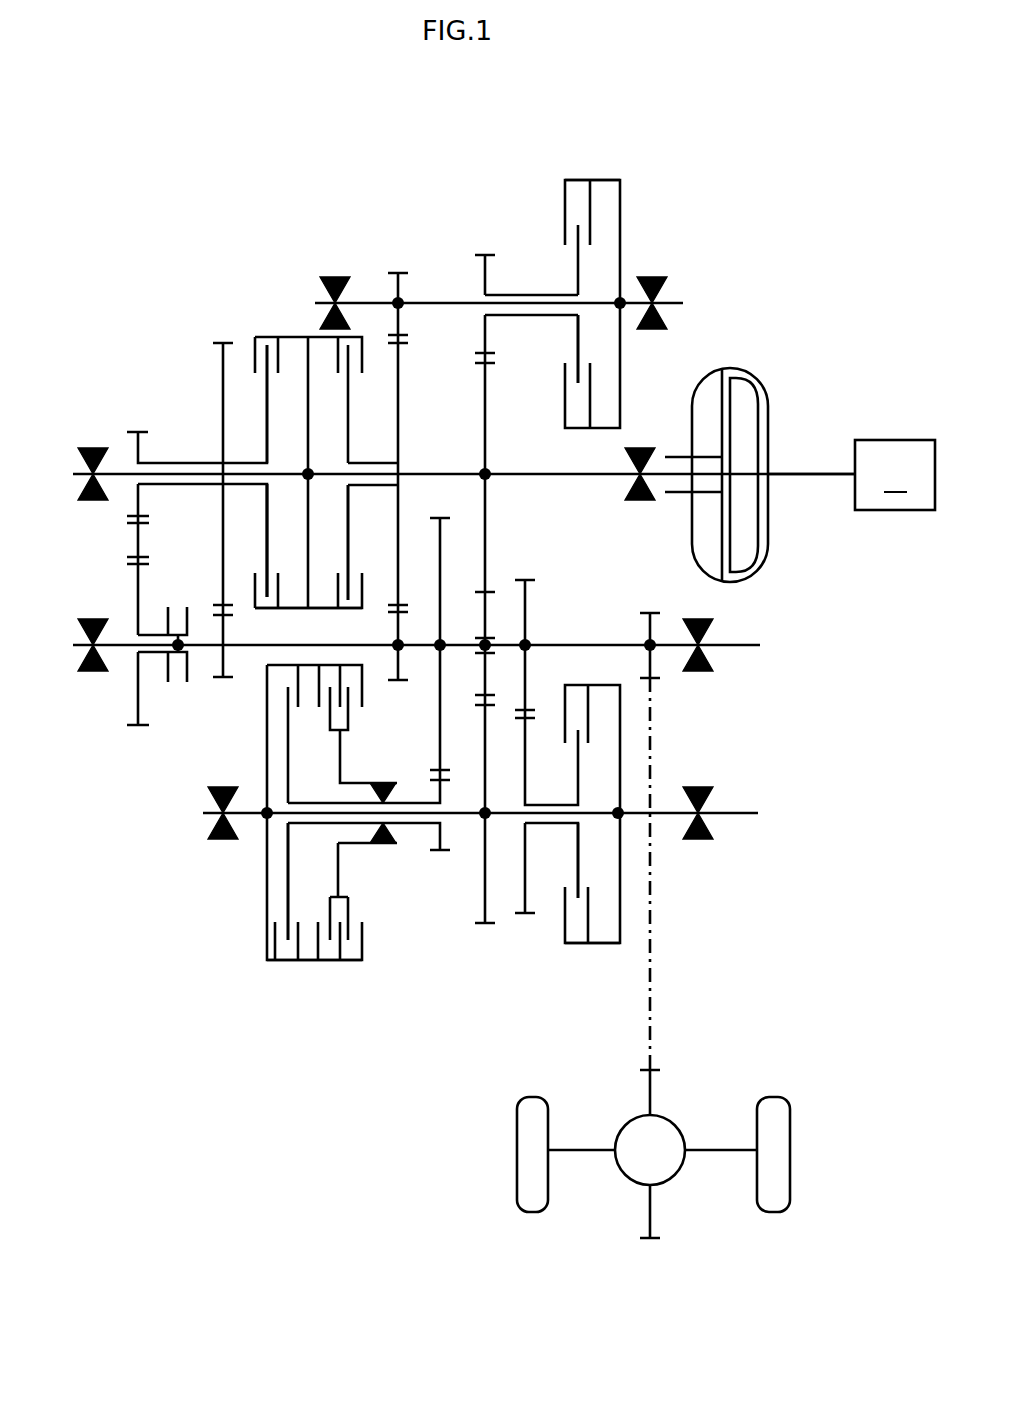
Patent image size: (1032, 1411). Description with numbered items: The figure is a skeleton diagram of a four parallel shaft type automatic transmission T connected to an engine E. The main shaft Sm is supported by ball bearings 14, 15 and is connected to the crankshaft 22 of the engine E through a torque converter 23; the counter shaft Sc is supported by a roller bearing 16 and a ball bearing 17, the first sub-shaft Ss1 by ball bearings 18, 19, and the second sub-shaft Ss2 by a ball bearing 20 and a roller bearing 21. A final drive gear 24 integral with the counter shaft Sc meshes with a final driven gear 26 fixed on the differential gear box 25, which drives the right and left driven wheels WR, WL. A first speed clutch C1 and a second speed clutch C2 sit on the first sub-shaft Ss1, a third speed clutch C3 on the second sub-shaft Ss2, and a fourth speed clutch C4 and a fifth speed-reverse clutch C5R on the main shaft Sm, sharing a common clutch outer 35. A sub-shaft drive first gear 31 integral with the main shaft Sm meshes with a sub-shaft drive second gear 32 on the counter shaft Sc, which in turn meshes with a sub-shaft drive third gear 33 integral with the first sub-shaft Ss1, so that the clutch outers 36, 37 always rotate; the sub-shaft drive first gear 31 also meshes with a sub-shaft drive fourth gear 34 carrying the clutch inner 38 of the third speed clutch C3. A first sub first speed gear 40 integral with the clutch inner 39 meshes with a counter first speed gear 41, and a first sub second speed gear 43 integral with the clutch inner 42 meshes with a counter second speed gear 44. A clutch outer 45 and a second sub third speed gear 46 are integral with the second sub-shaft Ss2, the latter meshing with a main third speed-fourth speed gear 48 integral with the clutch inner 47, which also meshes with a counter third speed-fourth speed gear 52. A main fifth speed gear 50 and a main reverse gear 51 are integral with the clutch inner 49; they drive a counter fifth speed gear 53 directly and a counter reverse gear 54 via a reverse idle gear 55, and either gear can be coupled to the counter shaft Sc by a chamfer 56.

The ball bearing 14 is at (638, 448).
The ball bearing 15 is at (93, 448).
The roller bearing 16 is at (705, 632).
The ball bearing 17 is at (93, 619).
The ball bearing 18 is at (700, 787).
The ball bearing 19 is at (223, 787).
The ball bearing 20 is at (662, 290).
The roller bearing 21 is at (335, 277).
The crankshaft 22 is at (820, 472).
The torque converter 23 is at (766, 372).
The final drive gear 24 is at (650, 612).
The differential gear box 25 is at (668, 1137).
The final driven gear 26 is at (655, 1068).
The sub-shaft drive first gear 31 is at (490, 365).
The sub-shaft drive second gear 32 is at (483, 592).
The sub-shaft drive third gear 33 is at (483, 925).
The sub-shaft drive fourth gear 34 is at (485, 253).
The clutch outer 35 is at (310, 608).
The clutch outer 36 is at (343, 962).
The clutch outer 37 is at (570, 948).
The clutch inner 38 is at (575, 352).
The clutch inner 39 is at (288, 893).
The first sub first speed gear 40 is at (440, 853).
The counter first speed gear 41 is at (437, 526).
The clutch inner 42 is at (575, 840).
The first sub second speed gear 43 is at (524, 917).
The counter second speed gear 44 is at (525, 578).
The clutch outer 45 is at (578, 180).
The second sub third speed gear 46 is at (398, 270).
The clutch inner 47 is at (352, 550).
The main third speed-fourth speed gear 48 is at (405, 340).
The clutch inner 49 is at (267, 558).
The main fifth speed gear 50 is at (218, 340).
The main reverse gear 51 is at (138, 430).
The counter third speed-fourth speed gear 52 is at (398, 683).
The counter fifth speed gear 53 is at (223, 678).
The counter reverse gear 54 is at (140, 728).
The reverse idle gear 55 is at (140, 528).
The chamfer 56 is at (172, 680).
The four parallel shaft type automatic transmission T is at (322, 245).
The engine E is at (895, 475).
The first speed clutch C1 is at (300, 968).
The second speed clutch C2 is at (598, 950).
The third speed clutch C3 is at (632, 225).
The fourth speed clutch C4 is at (320, 330).
The fifth speed-reverse clutch C5R is at (262, 335).
The main shaft Sm is at (503, 475).
The counter shaft Sc is at (580, 645).
The first sub-shaft Ss1 is at (722, 820).
The second sub-shaft Ss2 is at (443, 302).
The left driven wheel WL is at (530, 1110).
The right driven wheel WR is at (768, 1110).